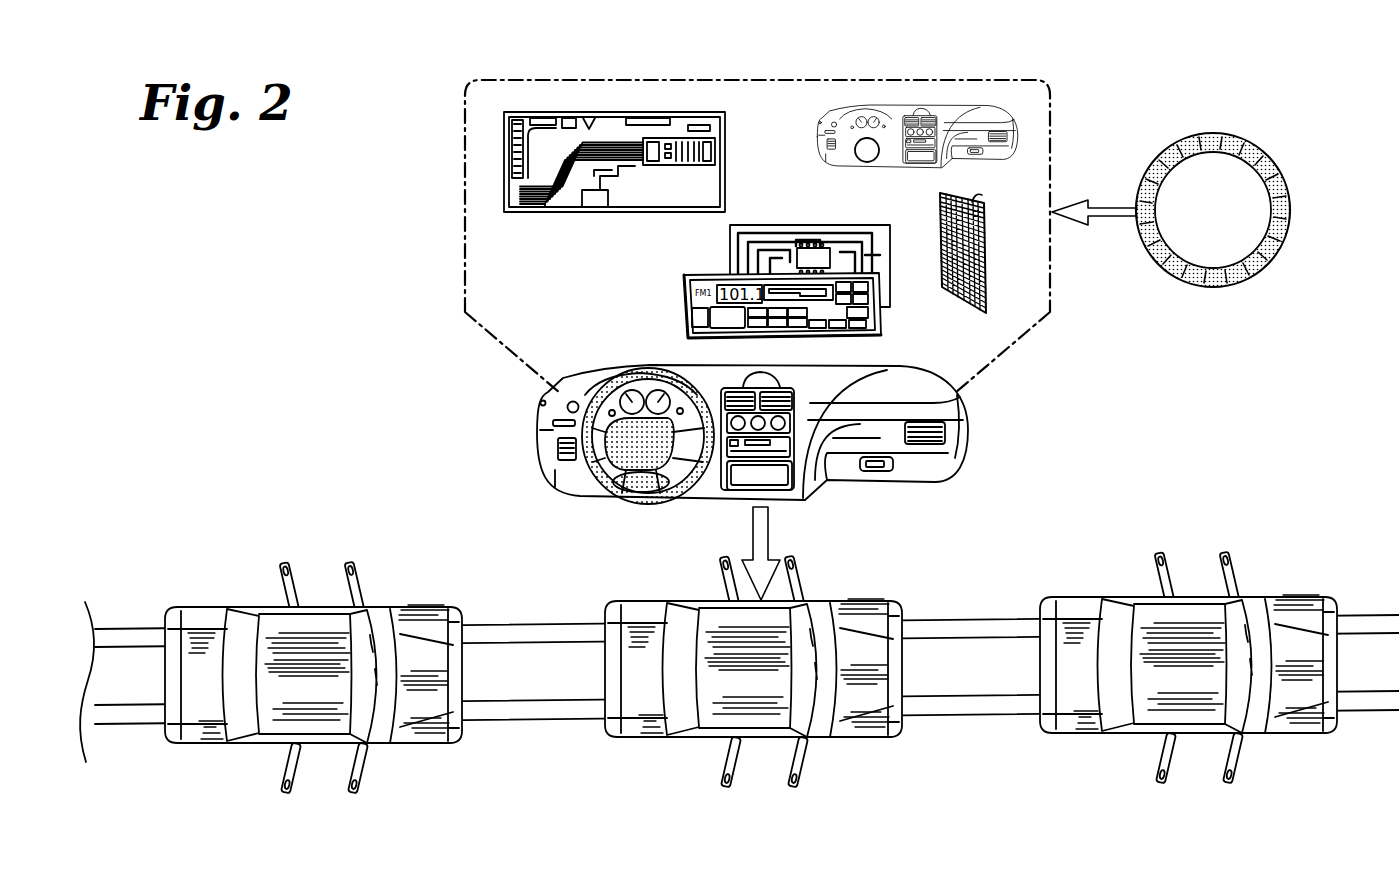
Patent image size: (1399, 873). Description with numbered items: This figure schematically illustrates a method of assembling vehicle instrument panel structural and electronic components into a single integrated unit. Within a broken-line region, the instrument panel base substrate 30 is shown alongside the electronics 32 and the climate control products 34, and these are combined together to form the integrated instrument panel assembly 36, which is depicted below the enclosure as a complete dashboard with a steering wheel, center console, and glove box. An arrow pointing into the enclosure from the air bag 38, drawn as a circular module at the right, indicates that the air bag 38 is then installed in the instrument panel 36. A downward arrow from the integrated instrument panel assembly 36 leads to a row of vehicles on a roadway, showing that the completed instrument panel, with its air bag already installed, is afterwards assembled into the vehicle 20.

The vehicle 20 is at (423, 742).
The instrument panel base substrate 30 is at (982, 107).
The electronics 32 is at (504, 171).
The climate control products 34 is at (986, 285).
The integrated instrument panel assembly 36 is at (518, 447).
The air bag 38 is at (1263, 267).